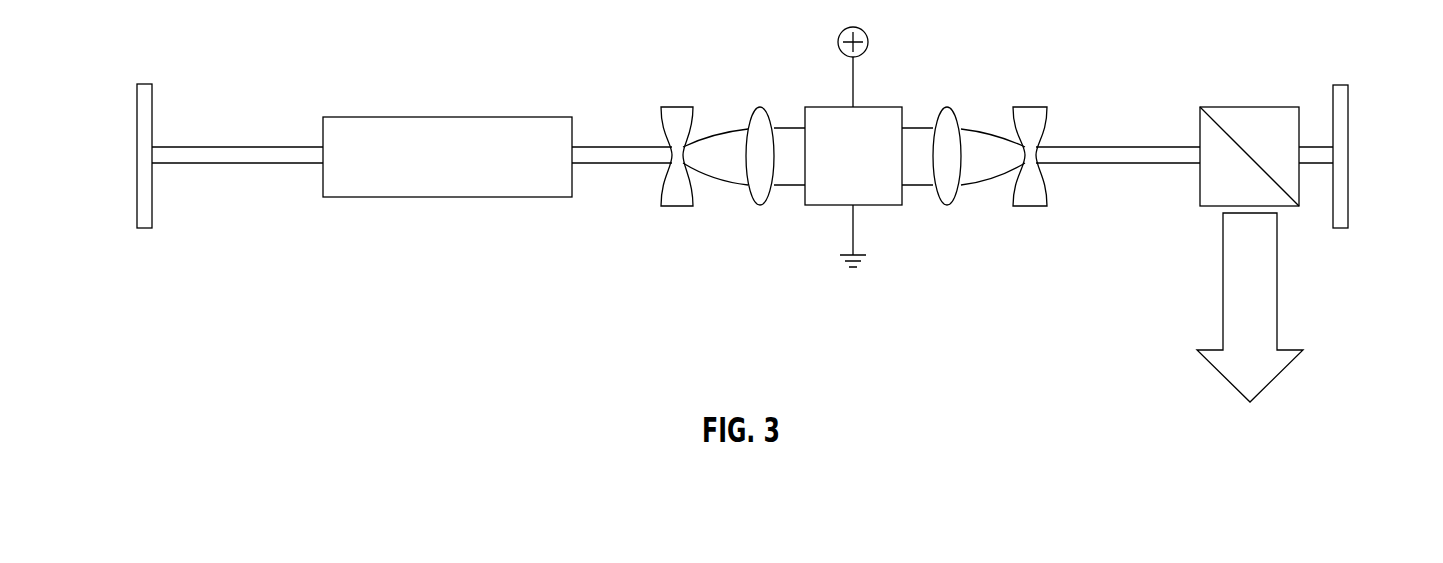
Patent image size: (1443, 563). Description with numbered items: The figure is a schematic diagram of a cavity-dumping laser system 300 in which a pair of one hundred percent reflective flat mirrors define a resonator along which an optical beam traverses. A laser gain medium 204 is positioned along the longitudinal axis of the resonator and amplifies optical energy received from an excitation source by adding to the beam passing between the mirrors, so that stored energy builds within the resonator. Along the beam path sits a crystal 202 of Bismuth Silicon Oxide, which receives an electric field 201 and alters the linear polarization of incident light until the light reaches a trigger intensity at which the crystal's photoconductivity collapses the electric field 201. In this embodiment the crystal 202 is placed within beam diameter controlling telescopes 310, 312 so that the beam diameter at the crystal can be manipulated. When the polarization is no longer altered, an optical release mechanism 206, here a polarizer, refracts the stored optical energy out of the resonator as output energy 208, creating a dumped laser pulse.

The cavity-dumping laser system 300 is at (231, 28).
The laser gain medium 204 is at (447, 117).
The beam diameter controlling telescope 312 is at (677, 107).
The beam diameter controlling telescope 310 is at (762, 107).
The crystal 202 is at (882, 107).
The electric field 201 is at (866, 30).
The optical release mechanism 206 is at (1200, 132).
The output energy 208 is at (1280, 280).